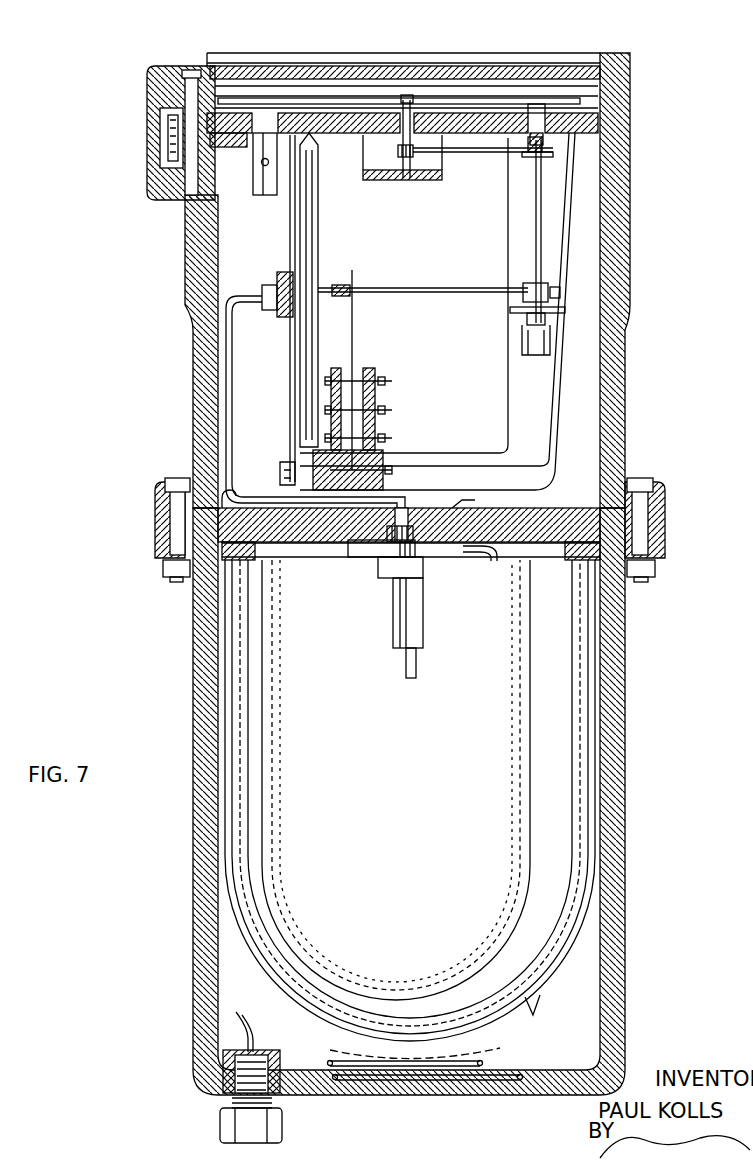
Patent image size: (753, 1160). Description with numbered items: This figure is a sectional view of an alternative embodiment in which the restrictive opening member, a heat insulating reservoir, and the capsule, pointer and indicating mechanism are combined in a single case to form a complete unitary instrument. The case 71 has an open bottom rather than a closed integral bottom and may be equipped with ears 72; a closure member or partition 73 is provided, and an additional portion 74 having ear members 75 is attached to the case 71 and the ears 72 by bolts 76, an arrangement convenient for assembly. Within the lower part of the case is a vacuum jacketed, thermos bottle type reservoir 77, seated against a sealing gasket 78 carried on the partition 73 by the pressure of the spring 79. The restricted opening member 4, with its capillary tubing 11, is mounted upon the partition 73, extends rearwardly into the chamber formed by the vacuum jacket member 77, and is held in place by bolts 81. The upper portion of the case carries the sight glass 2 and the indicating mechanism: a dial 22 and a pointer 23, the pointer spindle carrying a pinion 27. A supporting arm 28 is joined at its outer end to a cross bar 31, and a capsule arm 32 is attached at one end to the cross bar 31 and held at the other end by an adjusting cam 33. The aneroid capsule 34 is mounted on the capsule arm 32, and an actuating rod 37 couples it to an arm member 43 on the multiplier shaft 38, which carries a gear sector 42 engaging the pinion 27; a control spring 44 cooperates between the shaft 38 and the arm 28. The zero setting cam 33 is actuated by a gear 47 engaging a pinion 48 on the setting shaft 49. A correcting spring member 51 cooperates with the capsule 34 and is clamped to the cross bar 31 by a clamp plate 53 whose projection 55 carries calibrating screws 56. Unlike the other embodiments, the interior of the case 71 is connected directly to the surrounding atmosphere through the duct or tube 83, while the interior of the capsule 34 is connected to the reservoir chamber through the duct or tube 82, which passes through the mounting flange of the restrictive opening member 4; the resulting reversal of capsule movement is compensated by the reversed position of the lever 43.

The sight glass 2 is at (522, 66).
The restricted opening member 4 is at (423, 580).
The capillary tubing 11 is at (406, 663).
The dial 22 is at (328, 118).
The pointer 23 is at (437, 98).
The pinion 27 is at (398, 152).
The supporting arm 28 is at (508, 222).
The cross bar 31 is at (445, 453).
The capsule arm 32 is at (290, 376).
The adjusting cam 33 is at (266, 190).
The aneroid capsule 34 is at (318, 245).
The actuating rod 37 is at (450, 292).
The multiplier shaft 38 is at (540, 245).
The gear sector 42 is at (480, 153).
The arm member 43 is at (523, 290).
The control spring 44 is at (512, 313).
The gear 47 is at (240, 133).
The pinion 48 is at (165, 140).
The setting shaft 49 is at (188, 74).
The correcting spring member 51 is at (353, 338).
The clamp plate 53 is at (385, 480).
The projection 55 is at (380, 385).
The calibrating screws 56 is at (380, 438).
The case 71 is at (632, 268).
The ears 72 is at (160, 490).
The partition 73 is at (668, 522).
The additional case portion 74 is at (627, 760).
The ear members 75 is at (665, 550).
The bolts 76 is at (180, 484).
The vacuum jacketed member 77 is at (411, 1036).
The sealing gasket 78 is at (568, 560).
The spring 79 is at (522, 1077).
The bolts 81 is at (458, 510).
The duct or tube 82 is at (252, 468).
The duct or tube 83 is at (262, 1020).